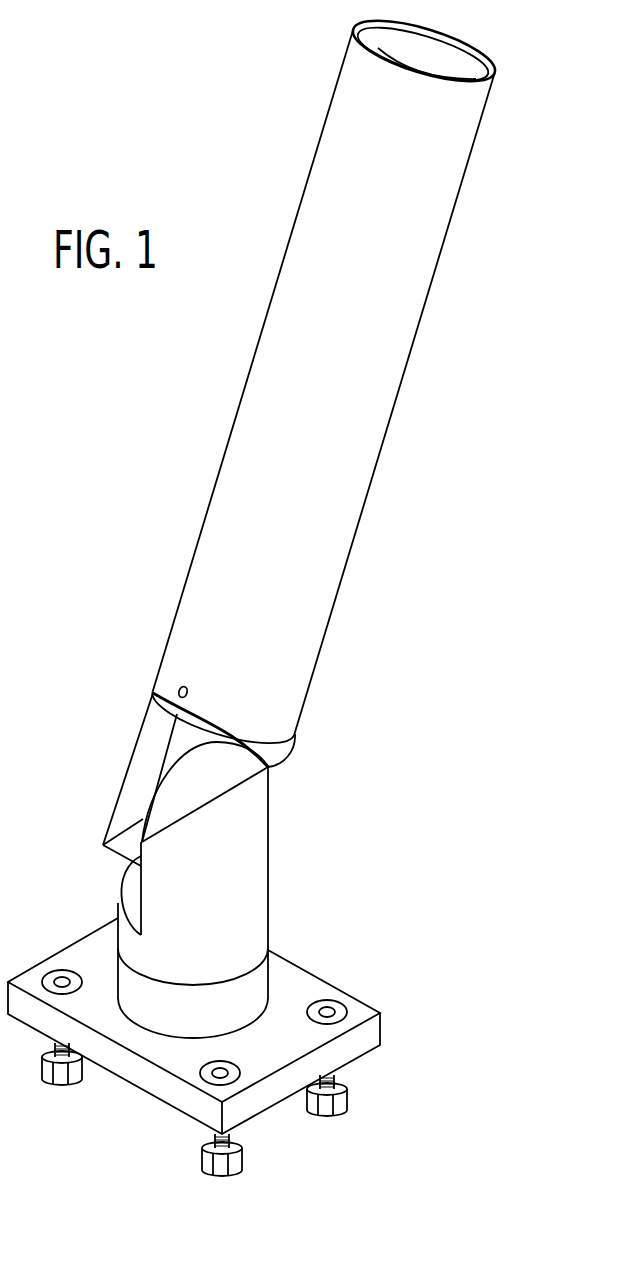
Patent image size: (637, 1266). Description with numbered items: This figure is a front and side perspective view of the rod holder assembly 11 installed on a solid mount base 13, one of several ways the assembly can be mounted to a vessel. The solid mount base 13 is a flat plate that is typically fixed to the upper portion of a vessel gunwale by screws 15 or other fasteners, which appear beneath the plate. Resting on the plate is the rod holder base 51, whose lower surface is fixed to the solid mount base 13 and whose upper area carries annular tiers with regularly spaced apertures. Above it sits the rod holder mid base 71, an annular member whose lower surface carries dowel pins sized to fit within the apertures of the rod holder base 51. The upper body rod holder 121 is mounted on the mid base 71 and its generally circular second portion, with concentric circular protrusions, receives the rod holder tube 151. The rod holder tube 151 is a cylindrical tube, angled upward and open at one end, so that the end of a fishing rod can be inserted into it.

The rod holder assembly 11 is at (268, 191).
The rod holder tube 151 is at (425, 303).
The upper body rod holder 121 is at (133, 760).
The rod holder mid base 71 is at (270, 850).
The rod holder base 51 is at (268, 978).
The solid mount base 13 is at (343, 983).
The screws 15 is at (343, 1081).